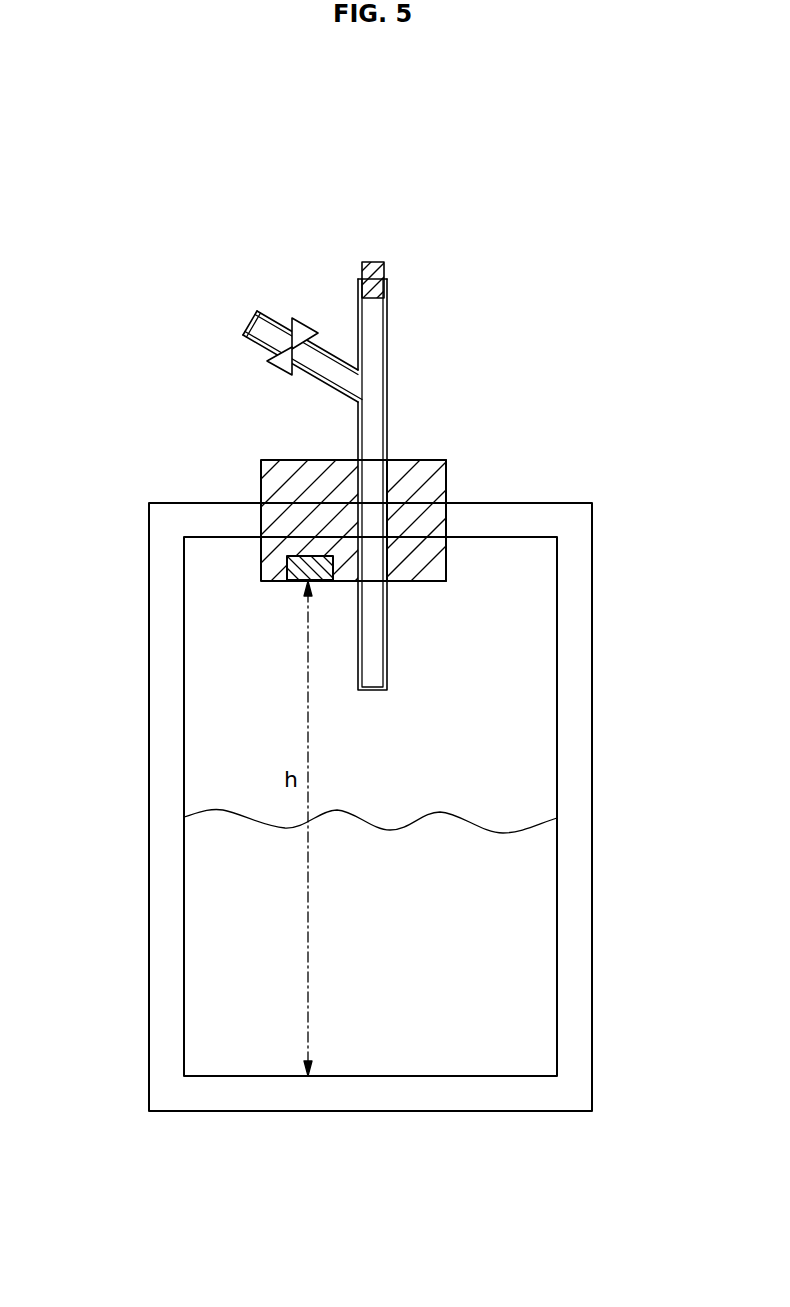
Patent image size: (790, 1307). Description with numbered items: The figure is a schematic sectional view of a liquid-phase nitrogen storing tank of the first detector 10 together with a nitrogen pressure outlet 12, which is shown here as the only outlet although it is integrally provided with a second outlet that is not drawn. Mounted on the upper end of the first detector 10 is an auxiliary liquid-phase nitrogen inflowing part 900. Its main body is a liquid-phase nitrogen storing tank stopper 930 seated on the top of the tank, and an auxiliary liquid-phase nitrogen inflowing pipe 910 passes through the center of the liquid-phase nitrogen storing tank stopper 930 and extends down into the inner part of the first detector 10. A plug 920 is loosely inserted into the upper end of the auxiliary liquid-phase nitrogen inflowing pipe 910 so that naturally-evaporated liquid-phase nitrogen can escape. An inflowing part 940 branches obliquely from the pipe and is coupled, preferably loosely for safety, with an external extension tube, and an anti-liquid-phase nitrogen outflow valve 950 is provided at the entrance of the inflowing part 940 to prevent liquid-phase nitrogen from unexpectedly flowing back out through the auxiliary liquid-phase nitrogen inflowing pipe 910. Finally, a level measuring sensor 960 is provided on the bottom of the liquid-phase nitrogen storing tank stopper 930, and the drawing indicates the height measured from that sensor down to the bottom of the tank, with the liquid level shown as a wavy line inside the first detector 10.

The first detector 10 is at (218, 967).
The nitrogen pressure outlet 12 is at (466, 478).
The auxiliary liquid-phase nitrogen inflowing part 900 is at (398, 360).
The auxiliary liquid-phase nitrogen inflowing pipe 910 is at (385, 653).
The plug 920 is at (373, 265).
The liquid-phase nitrogen storing tank stopper 930 is at (427, 561).
The inflowing part 940 is at (263, 308).
The anti-liquid-phase nitrogen outflow valve 950 is at (280, 362).
The level measuring sensor 960 is at (293, 568).